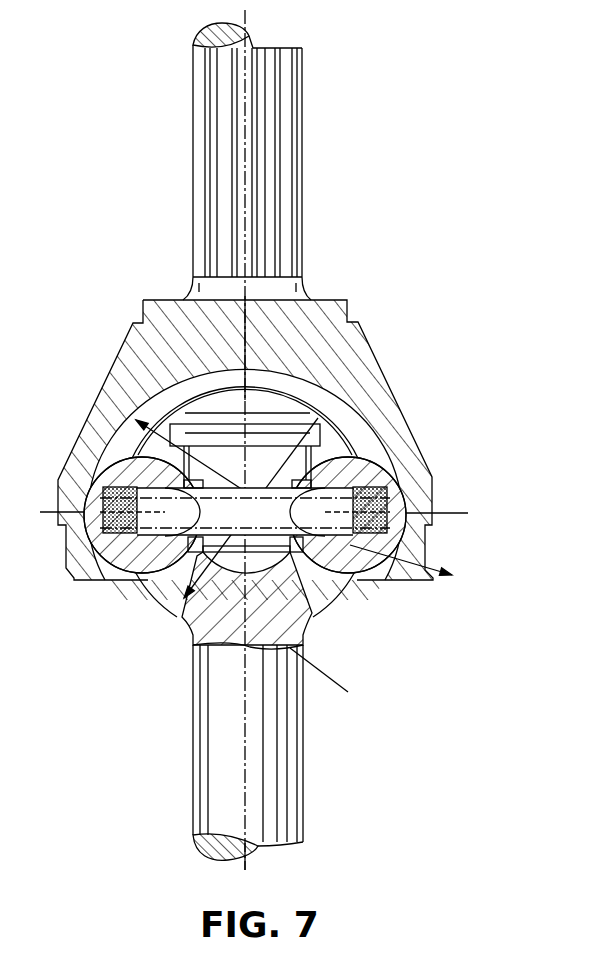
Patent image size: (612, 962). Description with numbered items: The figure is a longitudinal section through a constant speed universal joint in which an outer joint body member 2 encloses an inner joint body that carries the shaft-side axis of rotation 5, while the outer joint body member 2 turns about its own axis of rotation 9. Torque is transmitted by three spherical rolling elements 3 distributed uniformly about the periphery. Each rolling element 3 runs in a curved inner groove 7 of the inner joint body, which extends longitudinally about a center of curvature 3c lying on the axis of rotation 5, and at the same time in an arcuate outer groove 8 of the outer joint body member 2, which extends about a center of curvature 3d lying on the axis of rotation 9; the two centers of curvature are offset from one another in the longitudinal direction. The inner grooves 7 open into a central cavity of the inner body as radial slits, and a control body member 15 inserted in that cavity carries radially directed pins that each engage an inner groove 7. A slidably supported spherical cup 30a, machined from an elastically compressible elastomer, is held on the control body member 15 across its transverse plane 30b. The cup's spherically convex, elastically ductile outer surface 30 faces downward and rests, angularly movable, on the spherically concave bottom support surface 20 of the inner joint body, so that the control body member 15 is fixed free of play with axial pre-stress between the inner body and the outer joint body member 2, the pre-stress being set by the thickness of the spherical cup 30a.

The outer joint body member 2 is at (342, 326).
The rolling element 3 is at (400, 497).
The center of curvature of inner groove 3c is at (143, 390).
The center of curvature of outer groove 3d is at (372, 582).
The axis of rotation of inner joint body 5 is at (245, 782).
The inner groove 7 is at (353, 428).
The outer groove 8 is at (340, 407).
The axis of rotation of outer joint body member 9 is at (243, 197).
The control body member 15 is at (310, 495).
The bottom support surface 20 is at (312, 618).
The outer surface of spherical cup 30 is at (312, 600).
The spherical cup 30a is at (412, 516).
The transverse plane of control body 30b is at (395, 505).